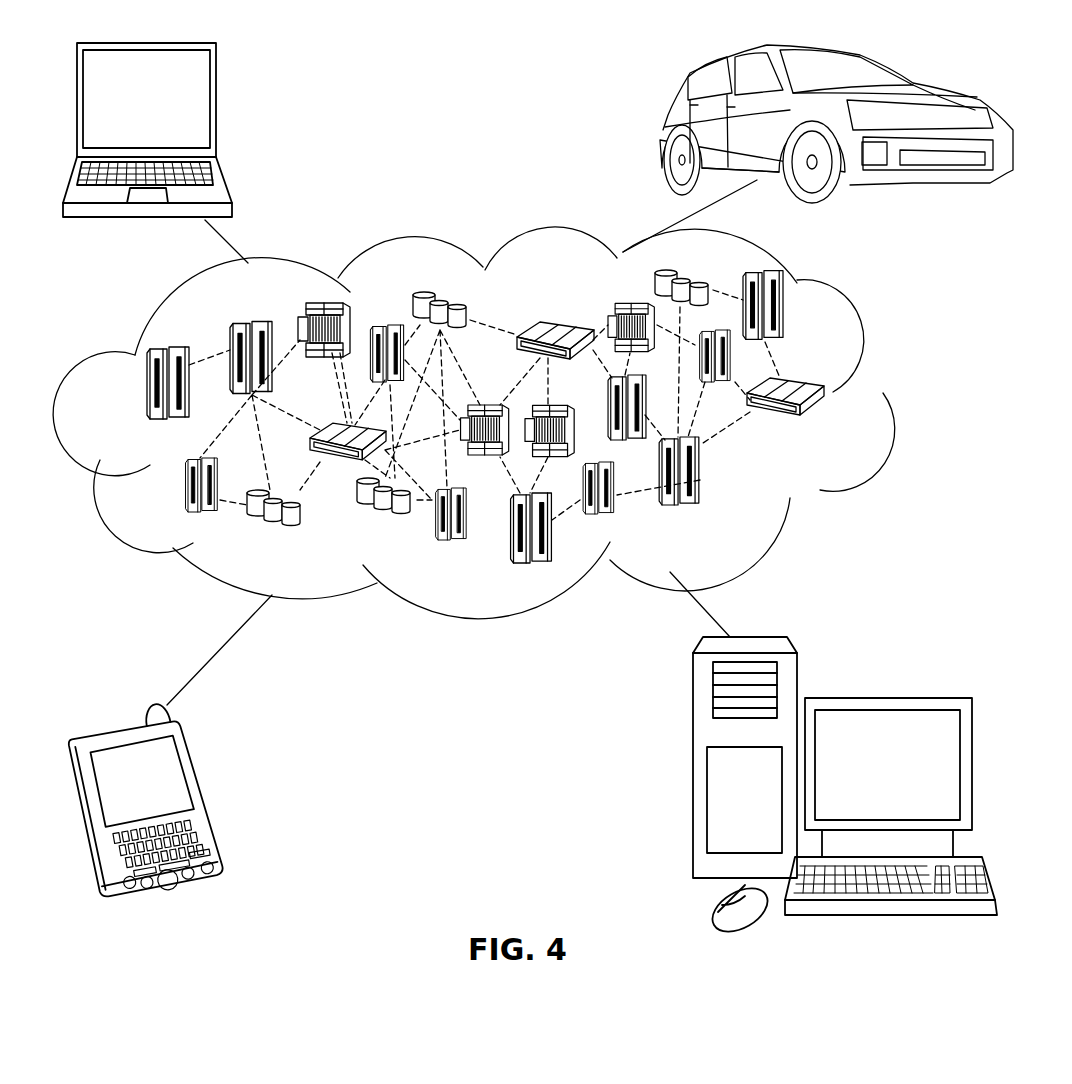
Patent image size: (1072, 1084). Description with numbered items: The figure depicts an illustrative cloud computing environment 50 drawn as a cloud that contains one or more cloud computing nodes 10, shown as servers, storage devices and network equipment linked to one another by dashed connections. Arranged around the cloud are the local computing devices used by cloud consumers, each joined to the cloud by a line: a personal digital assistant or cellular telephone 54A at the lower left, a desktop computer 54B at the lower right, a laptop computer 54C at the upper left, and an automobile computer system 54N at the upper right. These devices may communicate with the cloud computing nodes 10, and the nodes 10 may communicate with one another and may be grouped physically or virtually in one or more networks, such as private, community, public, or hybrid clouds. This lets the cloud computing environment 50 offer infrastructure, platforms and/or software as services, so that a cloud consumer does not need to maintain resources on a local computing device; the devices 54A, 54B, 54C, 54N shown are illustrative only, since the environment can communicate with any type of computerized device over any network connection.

The cloud computing nodes 10 is at (828, 427).
The cloud computing environment 50 is at (885, 395).
The personal digital assistant or cellular telephone 54A is at (212, 797).
The desktop computer 54B is at (885, 697).
The laptop computer 54C is at (216, 110).
The automobile computer system 54N is at (660, 122).